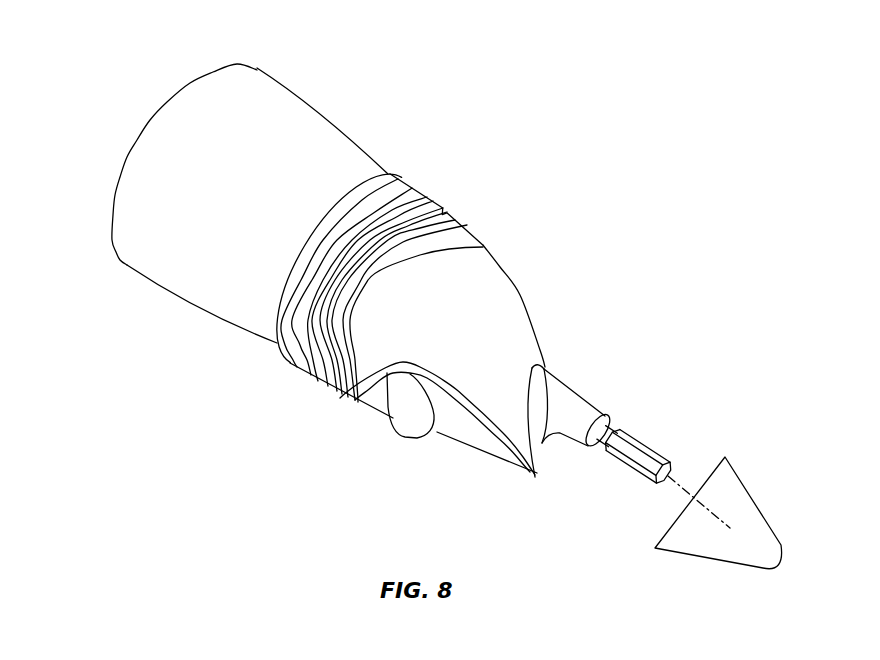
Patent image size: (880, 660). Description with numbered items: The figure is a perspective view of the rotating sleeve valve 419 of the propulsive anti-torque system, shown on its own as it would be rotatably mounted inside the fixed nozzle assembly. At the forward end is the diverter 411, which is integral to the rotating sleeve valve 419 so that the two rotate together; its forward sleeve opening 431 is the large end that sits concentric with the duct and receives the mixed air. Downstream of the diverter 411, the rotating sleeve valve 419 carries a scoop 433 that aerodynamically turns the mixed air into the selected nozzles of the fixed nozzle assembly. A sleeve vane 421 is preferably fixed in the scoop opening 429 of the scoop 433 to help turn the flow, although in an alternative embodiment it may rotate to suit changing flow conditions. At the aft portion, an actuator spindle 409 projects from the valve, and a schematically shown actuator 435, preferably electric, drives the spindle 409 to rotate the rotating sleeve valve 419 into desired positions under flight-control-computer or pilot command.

The actuator spindle 409 is at (637, 437).
The diverter 411 is at (297, 93).
The rotating sleeve valve 419 is at (520, 202).
The sleeve vane 421 is at (403, 435).
The scoop opening 429 is at (483, 440).
The forward sleeve opening 431 is at (148, 128).
The scoop 433 is at (503, 347).
The actuator 435 is at (712, 560).